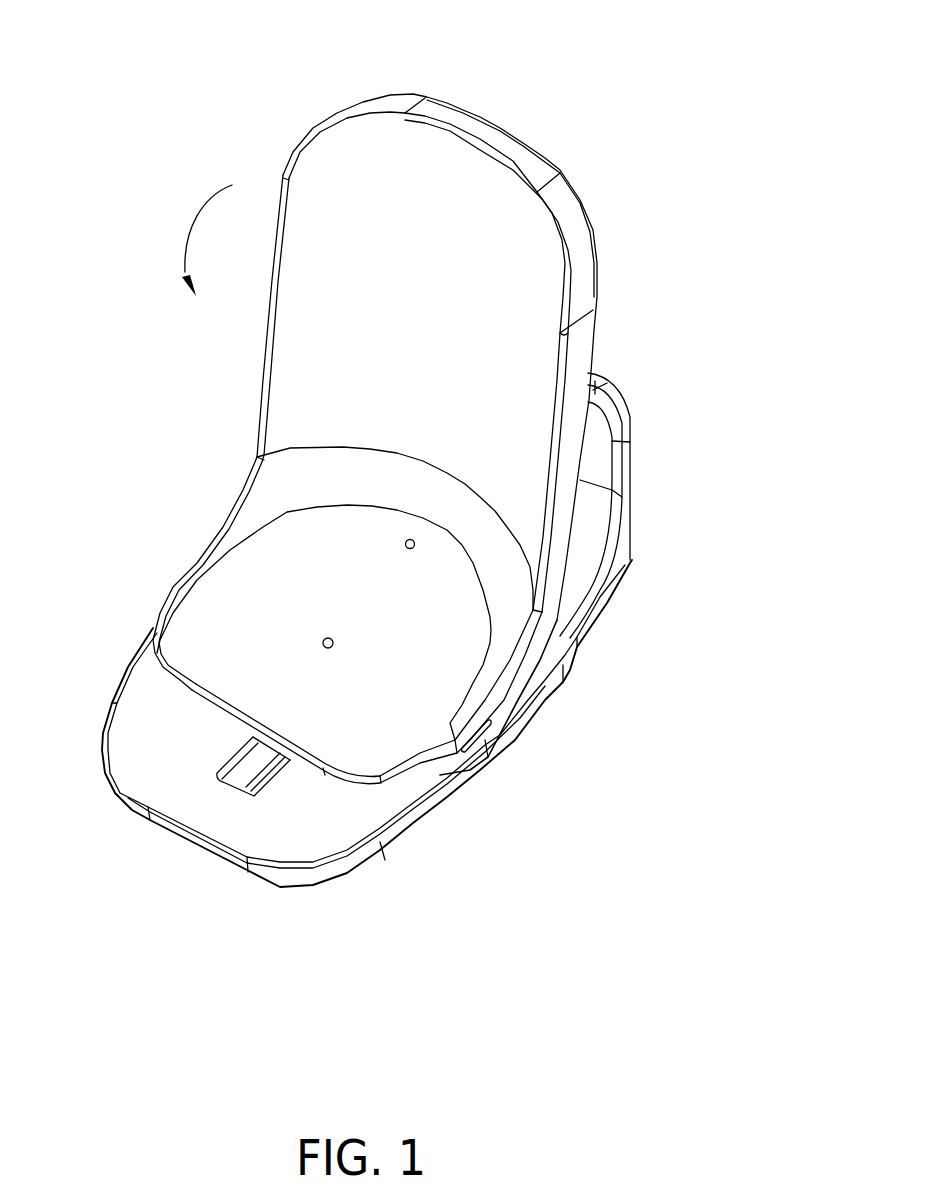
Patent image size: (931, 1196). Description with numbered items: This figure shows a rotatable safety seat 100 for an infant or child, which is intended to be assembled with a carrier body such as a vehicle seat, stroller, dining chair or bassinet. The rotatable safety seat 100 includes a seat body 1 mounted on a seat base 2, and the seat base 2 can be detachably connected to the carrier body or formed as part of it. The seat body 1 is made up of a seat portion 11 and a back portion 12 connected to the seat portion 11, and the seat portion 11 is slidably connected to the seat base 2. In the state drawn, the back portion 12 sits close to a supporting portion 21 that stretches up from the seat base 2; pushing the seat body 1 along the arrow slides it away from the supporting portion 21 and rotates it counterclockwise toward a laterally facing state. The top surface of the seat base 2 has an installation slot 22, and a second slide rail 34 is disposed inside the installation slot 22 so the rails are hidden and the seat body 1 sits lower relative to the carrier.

The rotatable safety seat 100 is at (91, 42).
The seat body 1 is at (123, 353).
The seat portion 11 is at (365, 549).
The back portion 12 is at (320, 351).
The seat base 2 is at (612, 653).
The supporting portion 21 is at (602, 462).
The installation slot 22 is at (296, 772).
The second slide rail 34 is at (247, 773).